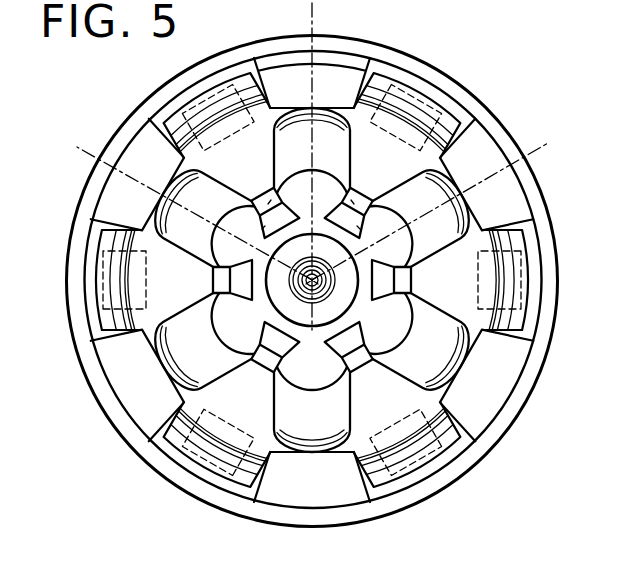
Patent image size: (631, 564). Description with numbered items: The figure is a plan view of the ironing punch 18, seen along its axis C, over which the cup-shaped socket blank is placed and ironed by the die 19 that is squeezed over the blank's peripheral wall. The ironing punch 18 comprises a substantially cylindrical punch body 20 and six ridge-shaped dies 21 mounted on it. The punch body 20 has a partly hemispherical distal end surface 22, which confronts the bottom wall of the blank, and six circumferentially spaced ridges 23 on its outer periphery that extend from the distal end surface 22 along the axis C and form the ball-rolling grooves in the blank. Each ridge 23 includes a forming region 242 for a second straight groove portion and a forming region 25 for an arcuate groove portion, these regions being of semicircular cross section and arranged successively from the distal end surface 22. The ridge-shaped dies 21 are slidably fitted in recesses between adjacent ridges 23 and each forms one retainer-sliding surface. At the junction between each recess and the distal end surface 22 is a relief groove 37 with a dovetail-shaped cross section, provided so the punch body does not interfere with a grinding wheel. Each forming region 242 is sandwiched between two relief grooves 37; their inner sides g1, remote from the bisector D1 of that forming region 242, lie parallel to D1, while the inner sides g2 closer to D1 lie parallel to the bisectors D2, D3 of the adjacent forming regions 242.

The die 19 is at (440, 62).
The forming region 25 is at (300, 137).
The ironing punch 18 is at (168, 212).
The punch body 20 is at (448, 168).
The forming region 242 is at (312, 44).
The ridges 23 is at (263, 127).
The ridge-shaped dies 21 is at (200, 155).
The distal end surface 22 is at (318, 313).
The relief groove 37 is at (270, 196).
The inner sides of relief grooves g1 is at (361, 228).
The inner sides of relief grooves g2 is at (311, 195).
The axis C is at (322, 280).
The bisector D1 is at (315, 25).
The bisector D2 is at (548, 143).
The bisector D3 is at (78, 147).